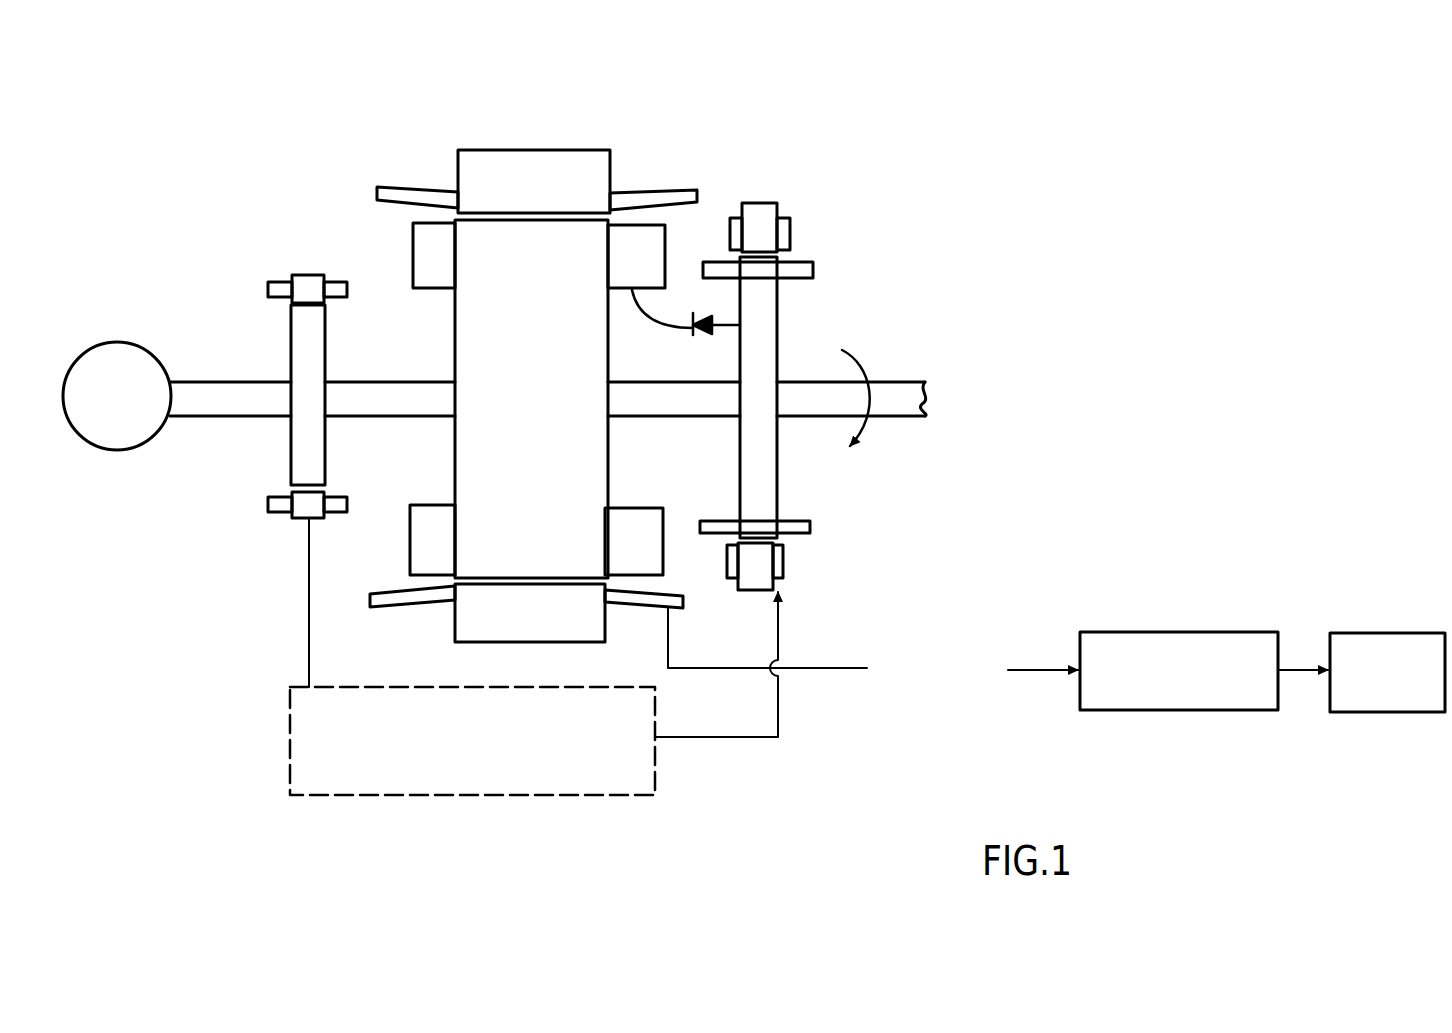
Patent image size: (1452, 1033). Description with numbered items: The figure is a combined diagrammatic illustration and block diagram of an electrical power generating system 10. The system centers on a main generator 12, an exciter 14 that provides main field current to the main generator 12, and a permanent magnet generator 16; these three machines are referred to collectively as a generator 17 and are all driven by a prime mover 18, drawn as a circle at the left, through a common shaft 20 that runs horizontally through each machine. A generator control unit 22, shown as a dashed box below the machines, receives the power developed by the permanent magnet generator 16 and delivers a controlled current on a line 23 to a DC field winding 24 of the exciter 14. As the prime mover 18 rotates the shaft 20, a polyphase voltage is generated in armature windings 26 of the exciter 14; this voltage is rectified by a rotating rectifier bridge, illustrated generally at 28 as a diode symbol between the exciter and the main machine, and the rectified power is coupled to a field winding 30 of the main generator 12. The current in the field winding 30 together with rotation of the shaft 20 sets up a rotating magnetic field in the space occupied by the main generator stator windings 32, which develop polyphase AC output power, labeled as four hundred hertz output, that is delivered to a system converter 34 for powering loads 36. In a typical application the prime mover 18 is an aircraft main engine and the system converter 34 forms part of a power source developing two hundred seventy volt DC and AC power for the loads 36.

The electrical power generating system 10 is at (726, 120).
The main generator 12 is at (572, 146).
The exciter 14 is at (777, 186).
The permanent magnet generator 16 is at (311, 268).
The generator 17 is at (442, 124).
The prime mover 18 is at (113, 342).
The shaft 20 is at (224, 400).
The generator control unit 22 is at (625, 785).
The line 23 is at (782, 625).
The DC field winding 24 is at (787, 563).
The armature windings 26 is at (822, 261).
The rotating rectifier bridge 28 is at (690, 336).
The field winding 30 is at (425, 270).
The main generator stator windings 32 is at (648, 190).
The system converter 34 is at (1188, 632).
The loads 36 is at (1365, 633).